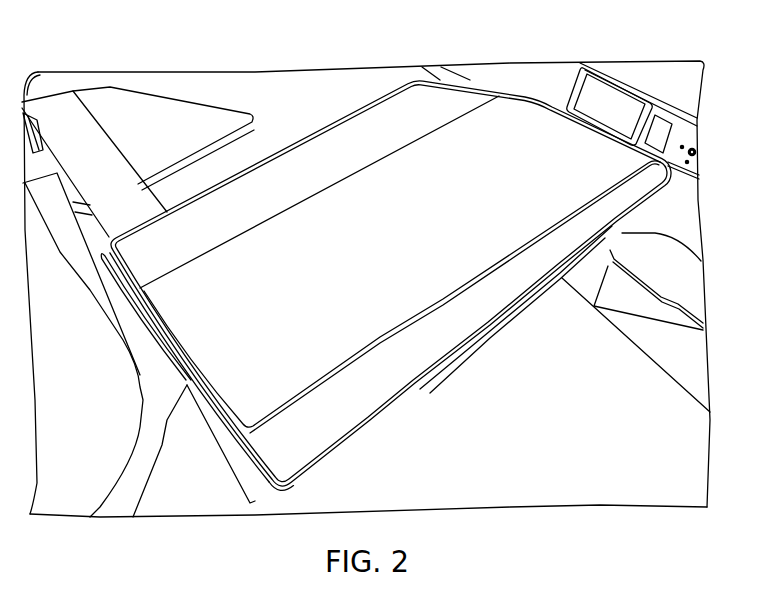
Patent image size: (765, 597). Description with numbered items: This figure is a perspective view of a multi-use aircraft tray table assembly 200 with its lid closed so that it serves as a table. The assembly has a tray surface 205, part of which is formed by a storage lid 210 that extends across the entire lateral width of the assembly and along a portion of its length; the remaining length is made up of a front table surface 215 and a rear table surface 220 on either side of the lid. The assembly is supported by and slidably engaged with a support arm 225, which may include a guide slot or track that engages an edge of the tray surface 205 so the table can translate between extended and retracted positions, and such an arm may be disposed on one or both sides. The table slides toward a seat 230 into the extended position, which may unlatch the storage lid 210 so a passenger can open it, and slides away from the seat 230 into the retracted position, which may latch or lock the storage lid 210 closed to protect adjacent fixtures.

The multi-use aircraft tray table assembly 200 is at (170, 94).
The tray surface 205 is at (186, 388).
The storage lid 210 is at (332, 368).
The front table surface 215 is at (470, 337).
The rear table surface 220 is at (333, 190).
The support arm 225 is at (118, 152).
The seat 230 is at (570, 436).